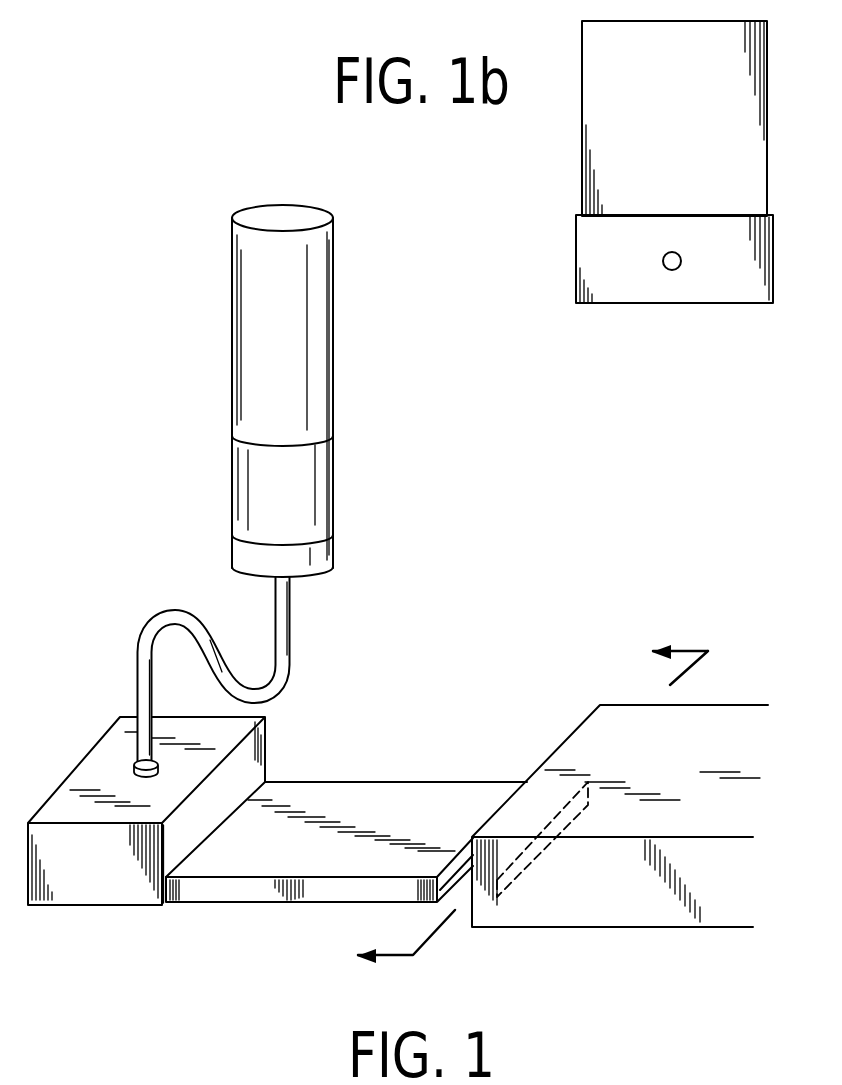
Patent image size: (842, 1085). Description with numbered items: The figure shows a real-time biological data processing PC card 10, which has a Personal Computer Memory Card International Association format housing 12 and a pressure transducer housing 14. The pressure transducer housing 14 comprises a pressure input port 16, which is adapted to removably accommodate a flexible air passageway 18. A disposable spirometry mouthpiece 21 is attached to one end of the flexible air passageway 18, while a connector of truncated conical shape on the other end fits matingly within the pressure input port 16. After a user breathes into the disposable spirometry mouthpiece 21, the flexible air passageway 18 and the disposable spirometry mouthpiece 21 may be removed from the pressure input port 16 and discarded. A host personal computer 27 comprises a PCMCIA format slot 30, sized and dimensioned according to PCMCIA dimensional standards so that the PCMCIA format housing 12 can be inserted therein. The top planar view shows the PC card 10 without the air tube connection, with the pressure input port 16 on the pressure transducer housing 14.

In FIG. 1, the real-time biological data processing PC card 10 is at (398, 613).
In FIG. 1B, the PCMCIA format housing 12 is at (768, 168).
In FIG. 1, the PCMCIA format housing 12 is at (248, 902).
In FIG. 1B, the pressure transducer housing 14 is at (775, 238).
In FIG. 1, the pressure transducer housing 14 is at (92, 905).
In FIG. 1B, the pressure input port 16 is at (663, 260).
In FIG. 1, the pressure input port 16 is at (134, 763).
In FIG. 1, the flexible air passageway 18 is at (290, 660).
In FIG. 1, the disposable spirometry mouthpiece 21 is at (333, 390).
In FIG. 1, the host personal computer 27 is at (620, 843).
In FIG. 1, the PCMCIA format slot 30 is at (563, 807).